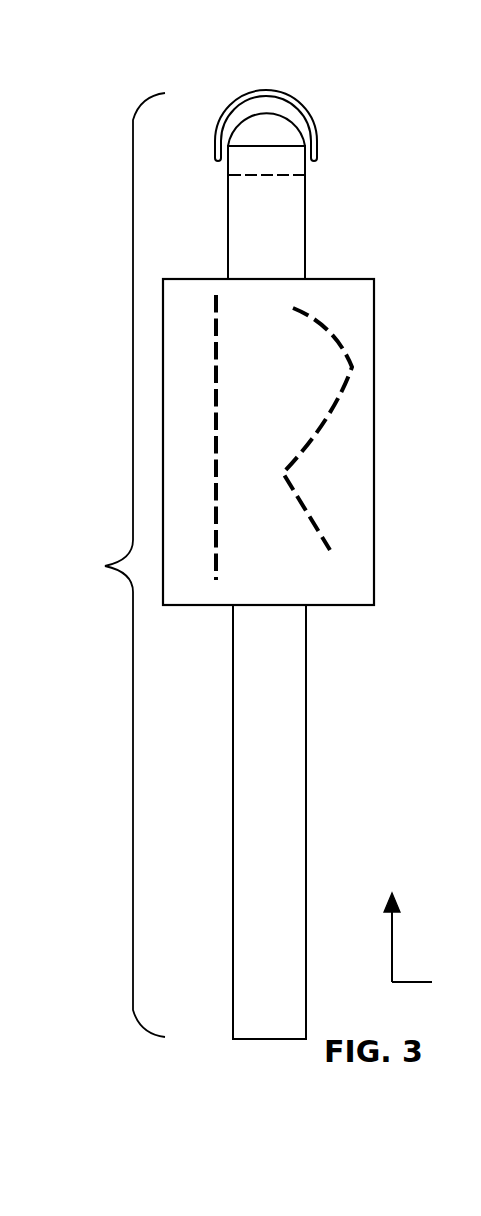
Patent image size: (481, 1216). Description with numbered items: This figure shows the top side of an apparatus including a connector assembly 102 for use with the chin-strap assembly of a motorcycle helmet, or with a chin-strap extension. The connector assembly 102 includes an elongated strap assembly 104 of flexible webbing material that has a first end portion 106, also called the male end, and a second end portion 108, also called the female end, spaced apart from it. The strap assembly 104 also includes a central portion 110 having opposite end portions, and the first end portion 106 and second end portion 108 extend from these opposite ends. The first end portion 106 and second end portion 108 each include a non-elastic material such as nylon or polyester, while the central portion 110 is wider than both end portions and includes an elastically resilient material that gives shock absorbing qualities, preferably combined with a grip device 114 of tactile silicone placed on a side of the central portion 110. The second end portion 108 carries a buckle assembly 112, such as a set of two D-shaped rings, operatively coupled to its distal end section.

The connector assembly 102 is at (432, 945).
The elongated strap assembly 104 is at (105, 567).
The first end portion 106 is at (306, 883).
The second end portion 108 is at (305, 227).
The central portion 110 is at (250, 416).
The buckle assembly 112 is at (262, 90).
The grip device 114 is at (220, 553).